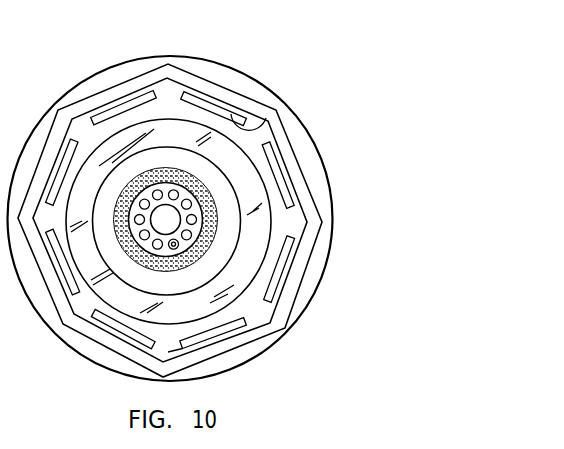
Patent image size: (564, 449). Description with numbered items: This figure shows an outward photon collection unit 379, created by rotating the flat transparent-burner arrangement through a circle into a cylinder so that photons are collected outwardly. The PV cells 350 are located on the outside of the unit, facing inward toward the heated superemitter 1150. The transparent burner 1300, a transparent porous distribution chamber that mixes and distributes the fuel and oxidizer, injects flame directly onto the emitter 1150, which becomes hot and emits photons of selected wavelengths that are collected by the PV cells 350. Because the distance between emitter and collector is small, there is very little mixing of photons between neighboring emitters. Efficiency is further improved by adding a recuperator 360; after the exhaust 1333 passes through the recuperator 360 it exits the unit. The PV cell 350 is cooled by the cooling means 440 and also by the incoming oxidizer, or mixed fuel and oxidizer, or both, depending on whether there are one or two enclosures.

The outward photon collection unit 379 is at (287, 76).
The PV cell 350 is at (263, 127).
The cooling means 440 is at (288, 292).
The transparent burner 1300 is at (241, 163).
The superemitter 1150 is at (215, 232).
The exhaust 1333 is at (172, 222).
The recuperator 360 is at (175, 249).